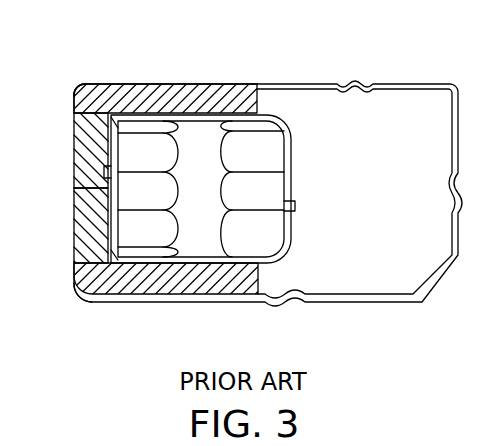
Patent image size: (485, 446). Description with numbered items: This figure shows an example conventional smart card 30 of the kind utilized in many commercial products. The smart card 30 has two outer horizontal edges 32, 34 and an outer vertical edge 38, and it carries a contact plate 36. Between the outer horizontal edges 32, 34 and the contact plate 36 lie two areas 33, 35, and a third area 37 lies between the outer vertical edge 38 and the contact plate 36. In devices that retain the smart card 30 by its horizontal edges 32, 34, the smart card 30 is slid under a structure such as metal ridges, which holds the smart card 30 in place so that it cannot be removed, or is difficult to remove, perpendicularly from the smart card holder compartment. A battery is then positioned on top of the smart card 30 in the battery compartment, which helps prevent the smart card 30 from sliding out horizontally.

The conventional smart card 30 is at (373, 55).
The outer horizontal edge 32 is at (192, 83).
The area between outer horizontal edge and contact plate 33 is at (77, 97).
The outer horizontal edge 34 is at (193, 298).
The area between outer horizontal edge and contact plate 35 is at (78, 275).
The contact plate 36 is at (210, 175).
The third area between outer vertical edge and contact plate 37 is at (82, 190).
The outer vertical edge 38 is at (75, 163).